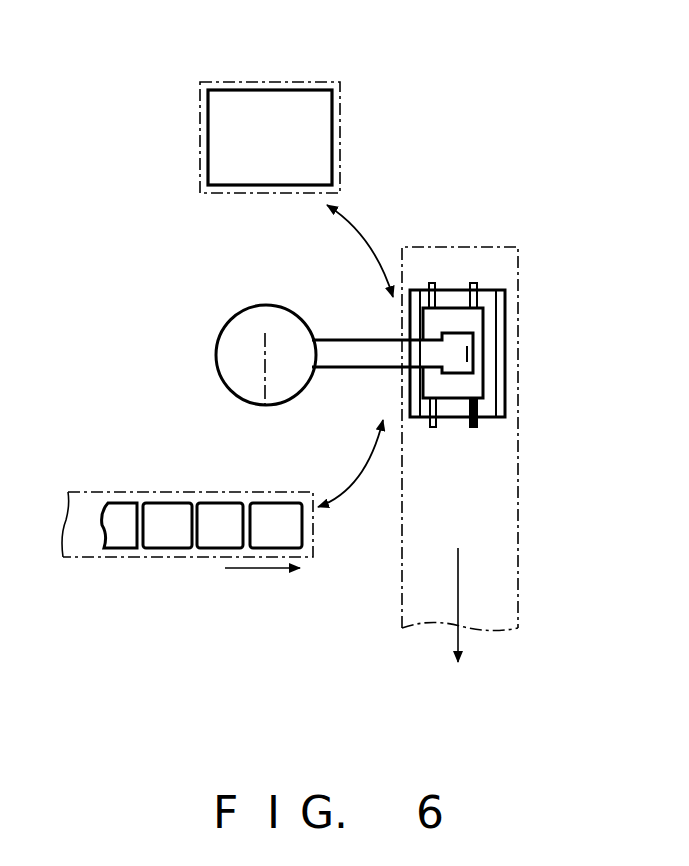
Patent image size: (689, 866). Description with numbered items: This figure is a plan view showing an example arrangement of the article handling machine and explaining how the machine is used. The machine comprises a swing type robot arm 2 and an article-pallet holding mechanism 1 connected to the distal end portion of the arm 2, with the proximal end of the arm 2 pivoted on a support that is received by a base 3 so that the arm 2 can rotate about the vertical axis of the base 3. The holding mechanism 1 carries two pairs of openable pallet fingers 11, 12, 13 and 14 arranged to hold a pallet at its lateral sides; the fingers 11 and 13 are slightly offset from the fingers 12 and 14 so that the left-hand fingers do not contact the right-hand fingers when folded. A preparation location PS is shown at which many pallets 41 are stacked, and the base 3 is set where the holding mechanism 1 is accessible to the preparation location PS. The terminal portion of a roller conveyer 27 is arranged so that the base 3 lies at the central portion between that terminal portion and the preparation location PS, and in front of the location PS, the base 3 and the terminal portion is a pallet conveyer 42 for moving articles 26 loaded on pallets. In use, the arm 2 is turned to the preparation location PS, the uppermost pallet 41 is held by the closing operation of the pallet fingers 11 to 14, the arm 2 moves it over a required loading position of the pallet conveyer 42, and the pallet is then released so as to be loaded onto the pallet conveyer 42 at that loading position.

The preparation location PS is at (307, 82).
The pallet 41 is at (334, 144).
The pallet conveyer 42 is at (518, 596).
The article-pallet holding mechanism 1 is at (487, 351).
The swing type robot arm 2 is at (333, 344).
The base 3 is at (234, 314).
The pallet finger 11 is at (432, 287).
The pallet finger 12 is at (476, 287).
The pallet finger 13 is at (433, 428).
The pallet finger 14 is at (478, 428).
The article 26 is at (172, 506).
The roller conveyer 27 is at (95, 558).